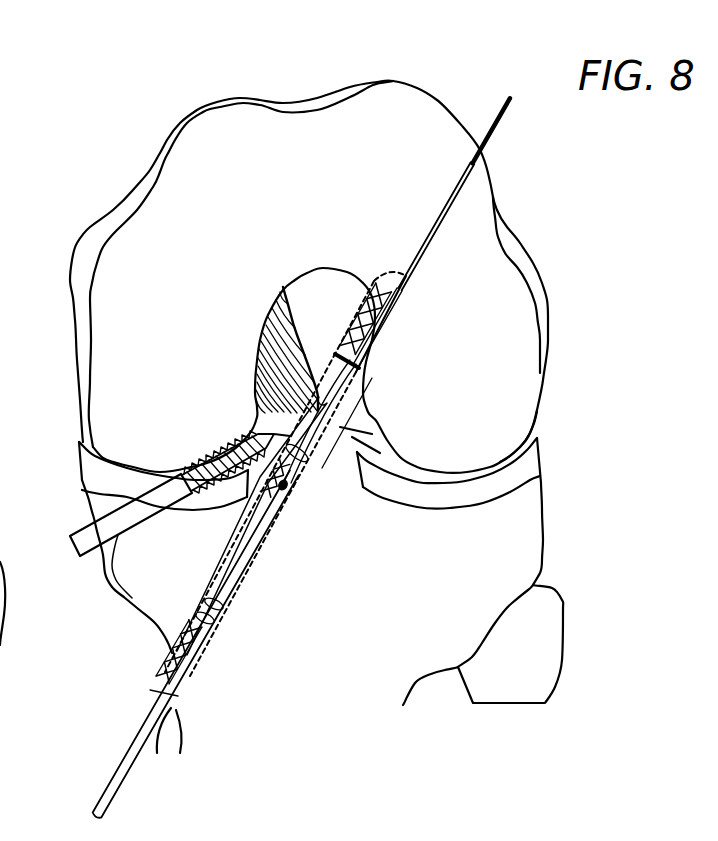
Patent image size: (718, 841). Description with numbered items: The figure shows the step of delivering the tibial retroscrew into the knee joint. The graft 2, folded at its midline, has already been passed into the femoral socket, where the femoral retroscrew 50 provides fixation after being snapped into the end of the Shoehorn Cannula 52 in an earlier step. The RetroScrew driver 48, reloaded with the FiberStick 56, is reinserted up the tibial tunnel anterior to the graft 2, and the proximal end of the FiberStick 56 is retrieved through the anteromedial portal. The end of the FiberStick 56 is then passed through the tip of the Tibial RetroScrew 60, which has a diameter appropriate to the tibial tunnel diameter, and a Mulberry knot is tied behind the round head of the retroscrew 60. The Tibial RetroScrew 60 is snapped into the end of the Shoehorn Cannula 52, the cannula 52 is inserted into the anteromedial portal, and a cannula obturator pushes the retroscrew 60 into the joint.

The graft 2 is at (340, 407).
The RetroScrew driver 48 is at (253, 543).
The femoral retroscrew 50 is at (397, 306).
The Shoehorn Cannula 52 is at (128, 603).
The FiberStick 56 is at (263, 392).
The Tibial RetroScrew 60 is at (199, 482).